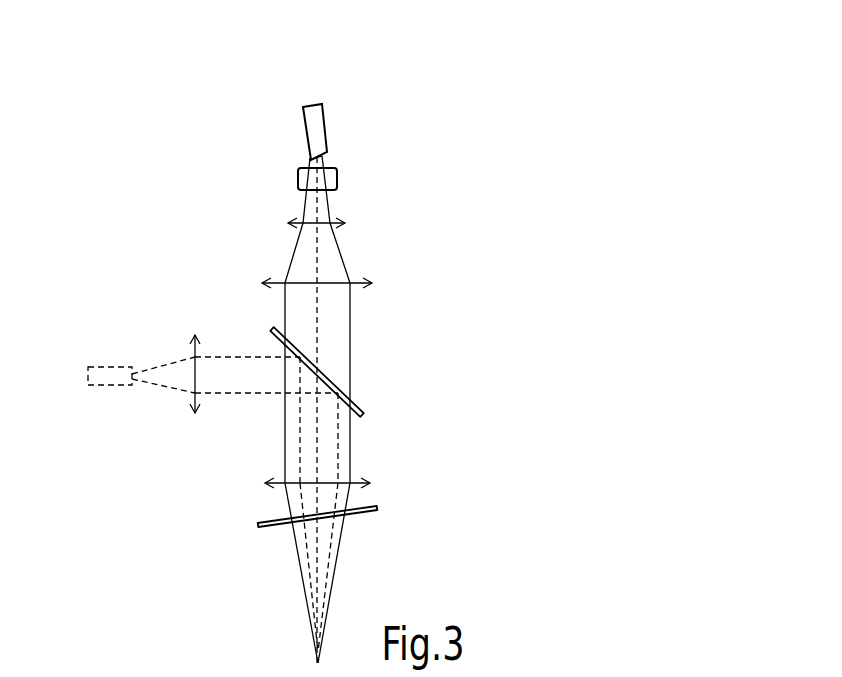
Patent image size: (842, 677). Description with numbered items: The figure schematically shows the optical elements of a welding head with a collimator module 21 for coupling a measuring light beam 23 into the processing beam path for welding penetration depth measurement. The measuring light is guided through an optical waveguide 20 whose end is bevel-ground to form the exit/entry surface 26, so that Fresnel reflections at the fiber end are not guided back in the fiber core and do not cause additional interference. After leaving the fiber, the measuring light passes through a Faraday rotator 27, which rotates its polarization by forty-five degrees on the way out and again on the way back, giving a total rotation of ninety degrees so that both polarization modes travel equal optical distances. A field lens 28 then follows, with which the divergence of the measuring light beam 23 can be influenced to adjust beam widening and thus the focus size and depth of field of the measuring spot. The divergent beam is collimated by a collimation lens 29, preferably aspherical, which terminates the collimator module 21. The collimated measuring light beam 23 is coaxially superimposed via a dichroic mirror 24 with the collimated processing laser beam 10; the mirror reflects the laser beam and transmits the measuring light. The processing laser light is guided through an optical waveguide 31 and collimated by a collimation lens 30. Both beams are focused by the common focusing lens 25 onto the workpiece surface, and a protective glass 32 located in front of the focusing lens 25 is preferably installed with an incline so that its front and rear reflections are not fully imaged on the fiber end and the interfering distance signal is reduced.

The processing laser beam 10 is at (240, 377).
The optical waveguide 20 is at (315, 125).
The collimator module 21 is at (248, 238).
The measuring light beam 23 is at (310, 206).
The dichroic mirror 24 is at (330, 377).
The focusing lens 25 is at (354, 482).
The exit/entry surface 26 is at (317, 157).
The Faraday rotator 27 is at (337, 180).
The field lens 28 is at (330, 221).
The collimation lens 29 is at (337, 282).
The collimation lens 30 is at (190, 375).
The optical waveguide 31 is at (112, 368).
The protective glass 32 is at (362, 513).